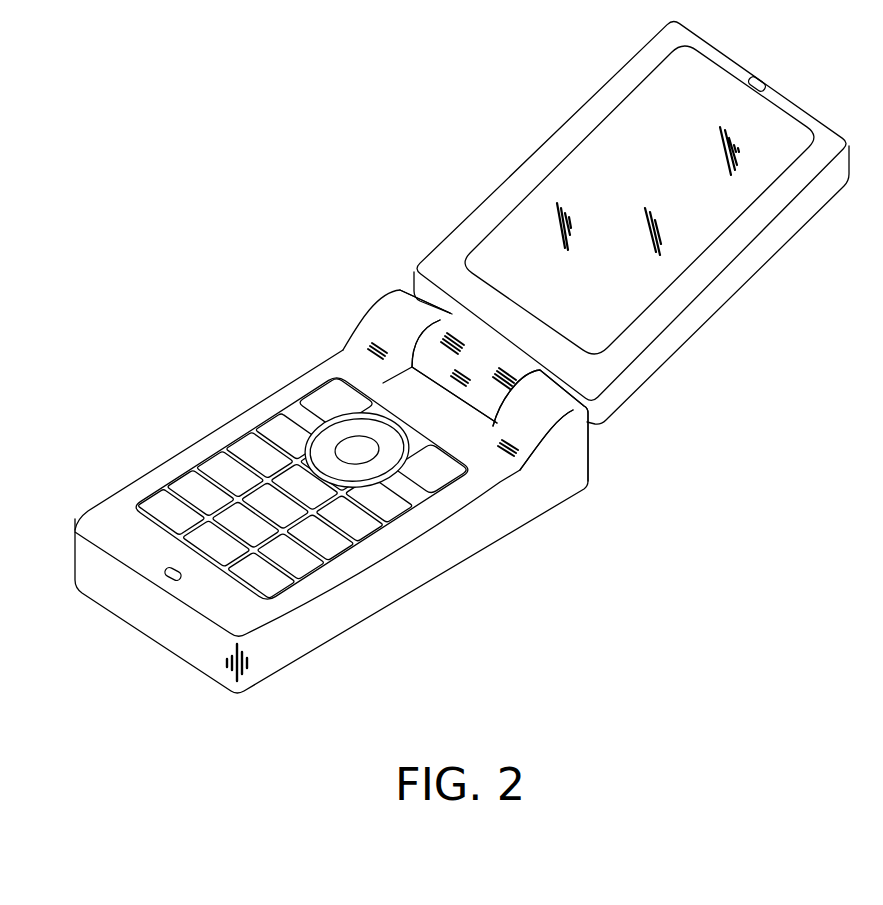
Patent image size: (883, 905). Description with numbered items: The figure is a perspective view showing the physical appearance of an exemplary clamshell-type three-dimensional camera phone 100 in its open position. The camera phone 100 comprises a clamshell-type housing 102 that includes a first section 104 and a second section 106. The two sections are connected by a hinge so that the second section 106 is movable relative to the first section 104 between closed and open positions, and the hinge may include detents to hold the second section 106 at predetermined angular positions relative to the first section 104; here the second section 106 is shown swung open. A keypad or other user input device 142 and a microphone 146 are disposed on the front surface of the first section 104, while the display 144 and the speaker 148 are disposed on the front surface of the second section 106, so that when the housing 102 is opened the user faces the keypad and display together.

The camera phone 100 is at (221, 164).
The clamshell-type housing 102 is at (621, 420).
The first section 104 is at (468, 555).
The second section 106 is at (727, 303).
The keypad or other user input device 142 is at (288, 427).
The display 144 is at (614, 132).
The microphone 146 is at (163, 578).
The speaker 148 is at (759, 79).